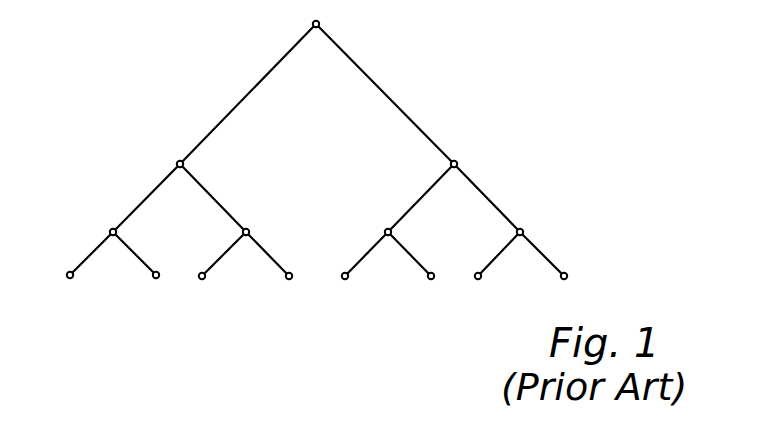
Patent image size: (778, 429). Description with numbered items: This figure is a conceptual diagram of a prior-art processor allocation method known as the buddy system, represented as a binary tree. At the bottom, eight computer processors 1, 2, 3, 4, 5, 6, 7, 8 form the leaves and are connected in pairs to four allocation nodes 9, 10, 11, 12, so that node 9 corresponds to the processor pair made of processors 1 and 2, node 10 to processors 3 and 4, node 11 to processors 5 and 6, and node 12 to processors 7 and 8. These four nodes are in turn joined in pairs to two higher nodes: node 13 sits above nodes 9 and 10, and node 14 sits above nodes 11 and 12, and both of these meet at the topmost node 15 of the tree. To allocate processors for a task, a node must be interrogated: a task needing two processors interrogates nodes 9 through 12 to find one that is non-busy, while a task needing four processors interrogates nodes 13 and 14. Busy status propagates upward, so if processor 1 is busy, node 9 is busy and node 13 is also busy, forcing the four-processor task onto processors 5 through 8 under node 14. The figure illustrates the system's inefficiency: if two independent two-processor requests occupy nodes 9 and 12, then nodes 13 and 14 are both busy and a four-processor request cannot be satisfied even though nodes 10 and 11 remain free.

The computer processor 1 is at (66, 275).
The computer processor 2 is at (152, 275).
The computer processor 3 is at (198, 275).
The computer processor 4 is at (285, 275).
The computer processor 5 is at (341, 275).
The computer processor 6 is at (427, 275).
The computer processor 7 is at (474, 275).
The computer processor 8 is at (560, 275).
The allocation node 9 is at (108, 230).
The allocation node 10 is at (242, 228).
The allocation node 11 is at (384, 228).
The allocation node 12 is at (513, 228).
The node 13 is at (175, 164).
The node 14 is at (449, 164).
The root node 15 is at (309, 23).